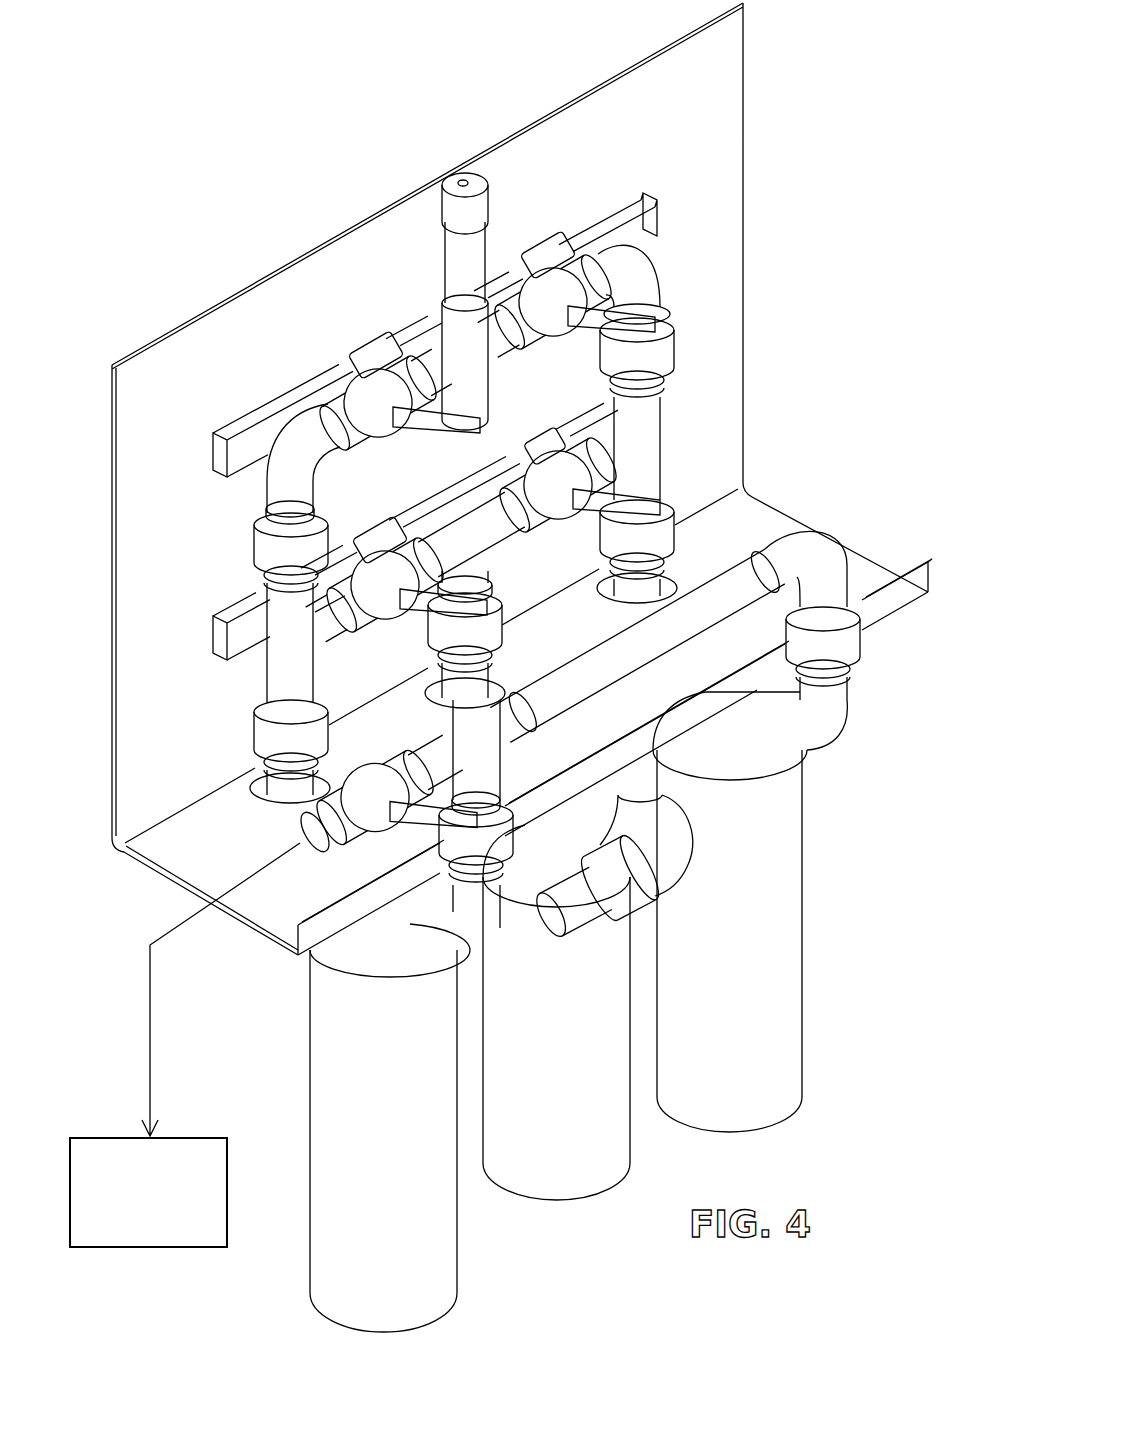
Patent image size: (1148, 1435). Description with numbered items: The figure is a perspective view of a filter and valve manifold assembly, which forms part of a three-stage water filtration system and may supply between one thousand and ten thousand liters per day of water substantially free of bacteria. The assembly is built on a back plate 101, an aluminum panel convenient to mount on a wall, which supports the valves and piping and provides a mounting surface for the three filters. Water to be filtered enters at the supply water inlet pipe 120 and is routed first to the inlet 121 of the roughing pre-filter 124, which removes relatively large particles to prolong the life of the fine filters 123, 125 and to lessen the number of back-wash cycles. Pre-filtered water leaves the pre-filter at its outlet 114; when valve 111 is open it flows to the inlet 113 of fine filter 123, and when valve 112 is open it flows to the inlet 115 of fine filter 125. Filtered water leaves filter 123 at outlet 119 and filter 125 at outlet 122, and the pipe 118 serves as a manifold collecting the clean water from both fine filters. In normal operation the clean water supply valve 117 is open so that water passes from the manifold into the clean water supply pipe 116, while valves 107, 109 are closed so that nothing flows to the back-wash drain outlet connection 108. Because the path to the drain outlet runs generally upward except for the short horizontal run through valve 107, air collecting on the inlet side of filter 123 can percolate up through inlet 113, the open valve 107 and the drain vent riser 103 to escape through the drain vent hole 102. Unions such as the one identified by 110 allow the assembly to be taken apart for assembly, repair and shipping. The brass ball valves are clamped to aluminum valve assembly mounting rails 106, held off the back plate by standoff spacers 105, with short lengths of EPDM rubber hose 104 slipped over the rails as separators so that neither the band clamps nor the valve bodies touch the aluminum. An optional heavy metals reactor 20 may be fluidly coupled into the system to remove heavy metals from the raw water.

The heavy metals reactor 20 is at (228, 1244).
The back plate 101 is at (290, 259).
The drain vent hole 102 is at (466, 180).
The drain vent riser 103 is at (441, 250).
The EPDM rubber hose 104 is at (546, 246).
The standoff spacers 105 is at (633, 207).
The valve assembly mounting rails 106 is at (654, 206).
The valve 107 is at (405, 437).
The back-wash drain outlet connection 108 is at (489, 417).
The valve 109 is at (583, 332).
The union 110 is at (672, 335).
The valve 111 is at (400, 620).
The valve 112 is at (566, 530).
The inlet 113 is at (290, 800).
The outlet 114 is at (442, 692).
The inlet 115 is at (625, 610).
The clean water supply pipe 116 is at (315, 858).
The clean water supply valve 117 is at (382, 828).
The pipe 118 is at (713, 574).
The outlet 119 is at (430, 923).
The supply water inlet pipe 120 is at (556, 930).
The inlet 121 is at (614, 824).
The outlet 122 is at (794, 736).
The fine filter 123 is at (470, 1198).
The roughing pre-filter 124 is at (637, 1118).
The fine filter 125 is at (810, 1052).